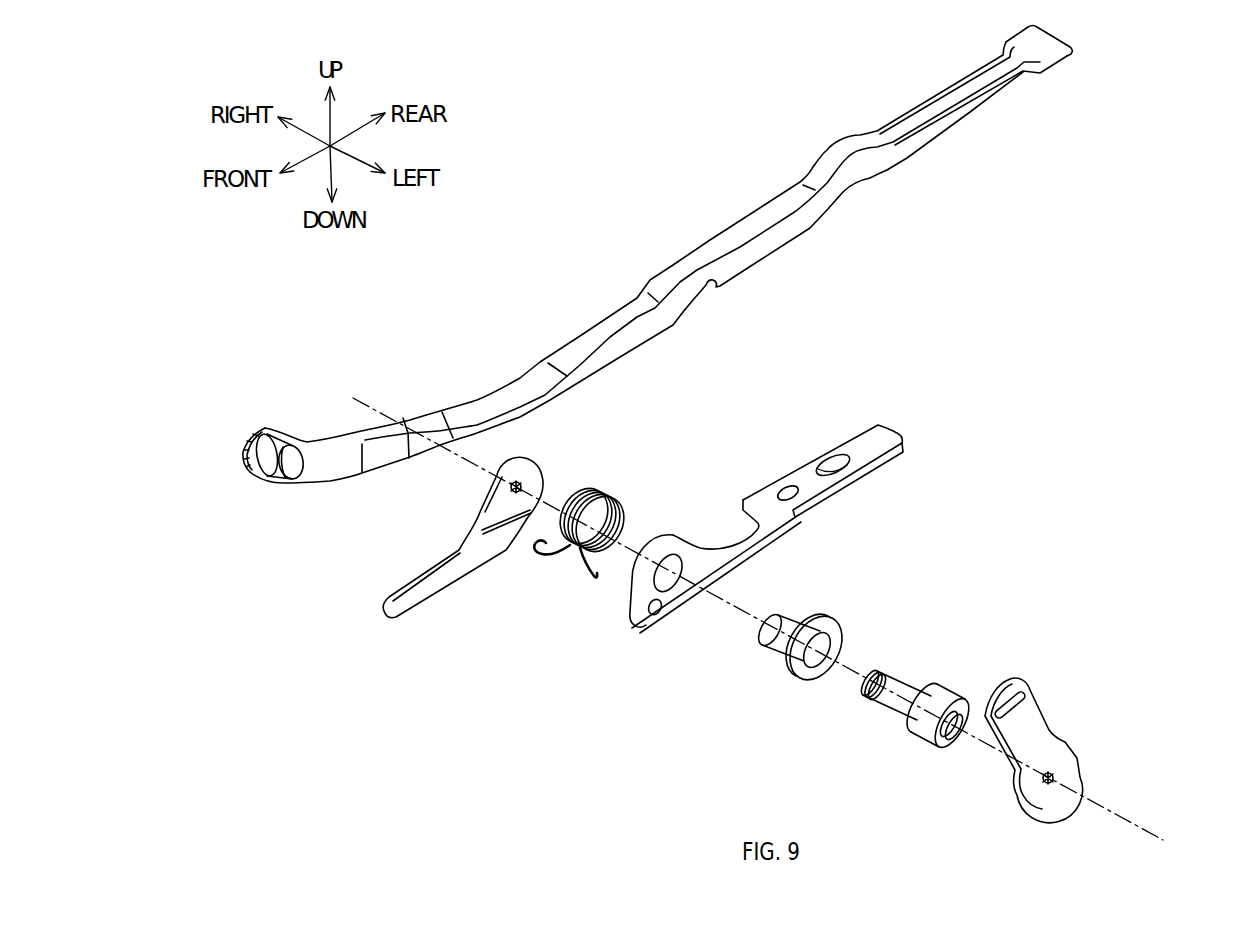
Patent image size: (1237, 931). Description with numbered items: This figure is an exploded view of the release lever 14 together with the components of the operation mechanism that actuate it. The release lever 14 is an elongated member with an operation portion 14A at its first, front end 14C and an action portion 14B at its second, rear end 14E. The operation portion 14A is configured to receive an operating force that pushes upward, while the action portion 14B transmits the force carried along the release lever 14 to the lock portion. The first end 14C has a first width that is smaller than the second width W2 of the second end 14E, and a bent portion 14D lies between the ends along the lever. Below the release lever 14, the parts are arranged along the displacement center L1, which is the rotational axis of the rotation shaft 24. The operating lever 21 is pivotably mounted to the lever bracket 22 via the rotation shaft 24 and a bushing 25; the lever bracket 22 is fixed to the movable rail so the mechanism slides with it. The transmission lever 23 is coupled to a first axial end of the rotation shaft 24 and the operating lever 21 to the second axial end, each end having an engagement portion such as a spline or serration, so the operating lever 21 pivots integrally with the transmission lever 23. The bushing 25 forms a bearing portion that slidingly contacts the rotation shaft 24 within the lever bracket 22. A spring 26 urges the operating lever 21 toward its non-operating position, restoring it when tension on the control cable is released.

The release lever 14 is at (682, 257).
The operation portion 14A is at (268, 463).
The action portion 14B is at (1047, 43).
The first end 14C is at (362, 435).
The bent portion 14D is at (842, 147).
The second end 14E is at (937, 105).
The second width W2 is at (930, 62).
The displacement center L1 is at (1137, 823).
The operating lever 21 is at (426, 590).
The lever bracket 22 is at (863, 442).
The transmission lever 23 is at (1035, 712).
The rotation shaft 24 is at (905, 681).
The bushing 25 is at (795, 610).
The spring 26 is at (606, 496).